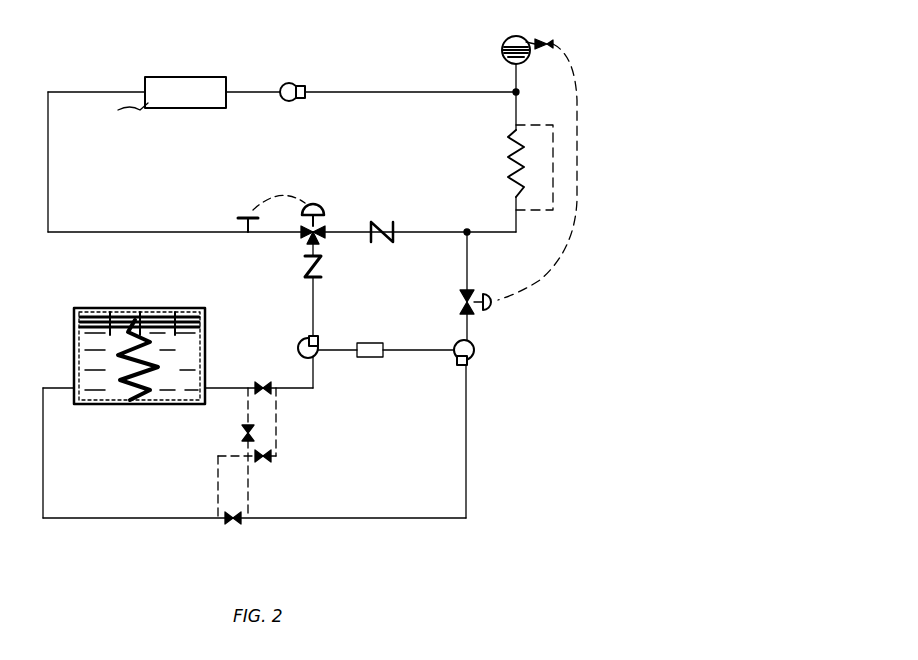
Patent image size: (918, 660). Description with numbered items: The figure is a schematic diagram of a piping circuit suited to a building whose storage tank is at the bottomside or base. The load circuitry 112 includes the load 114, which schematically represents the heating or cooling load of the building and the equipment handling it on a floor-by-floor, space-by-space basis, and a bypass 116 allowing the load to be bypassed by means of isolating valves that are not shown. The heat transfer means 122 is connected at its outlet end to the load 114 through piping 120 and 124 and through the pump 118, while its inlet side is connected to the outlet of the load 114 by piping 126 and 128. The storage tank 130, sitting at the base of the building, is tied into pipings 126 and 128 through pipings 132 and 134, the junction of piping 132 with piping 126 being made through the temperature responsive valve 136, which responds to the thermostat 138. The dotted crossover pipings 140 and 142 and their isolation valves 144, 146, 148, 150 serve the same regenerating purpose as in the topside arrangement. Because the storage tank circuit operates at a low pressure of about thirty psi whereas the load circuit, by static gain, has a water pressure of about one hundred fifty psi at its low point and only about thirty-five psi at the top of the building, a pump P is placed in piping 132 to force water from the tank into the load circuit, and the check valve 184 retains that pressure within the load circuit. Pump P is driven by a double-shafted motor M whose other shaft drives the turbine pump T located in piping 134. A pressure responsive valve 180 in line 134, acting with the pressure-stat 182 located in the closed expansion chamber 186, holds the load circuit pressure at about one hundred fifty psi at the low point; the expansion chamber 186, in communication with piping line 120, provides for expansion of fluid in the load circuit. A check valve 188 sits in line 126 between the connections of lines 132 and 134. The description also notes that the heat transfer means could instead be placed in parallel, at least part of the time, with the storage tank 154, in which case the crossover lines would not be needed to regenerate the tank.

The load circuitry 112 is at (304, 50).
The load 114 is at (508, 176).
The bypass 116 is at (549, 124).
The pump 118 is at (300, 84).
The piping 120 is at (404, 92).
The heat transfer means 122 is at (186, 77).
The piping 124 is at (250, 90).
The piping 126 is at (170, 231).
The piping 128 is at (462, 232).
The storage tank 130 is at (207, 325).
The piping 132 is at (312, 317).
The piping 134 is at (470, 318).
The temperature responsive valve 136 is at (323, 208).
The thermostat 138 is at (243, 215).
The crossover piping 140 is at (217, 480).
The crossover piping 142 is at (248, 490).
The isolation valve 144 is at (264, 384).
The isolation valve 146 is at (272, 460).
The isolation valve 148 is at (243, 433).
The isolation valve 150 is at (229, 524).
The storage tank 154 is at (128, 310).
The pressure responsive valve 180 is at (492, 292).
The pressure-stat 182 is at (550, 45).
The check valve 184 is at (308, 266).
The expansion chamber 186 is at (527, 40).
The check valve 188 is at (399, 209).